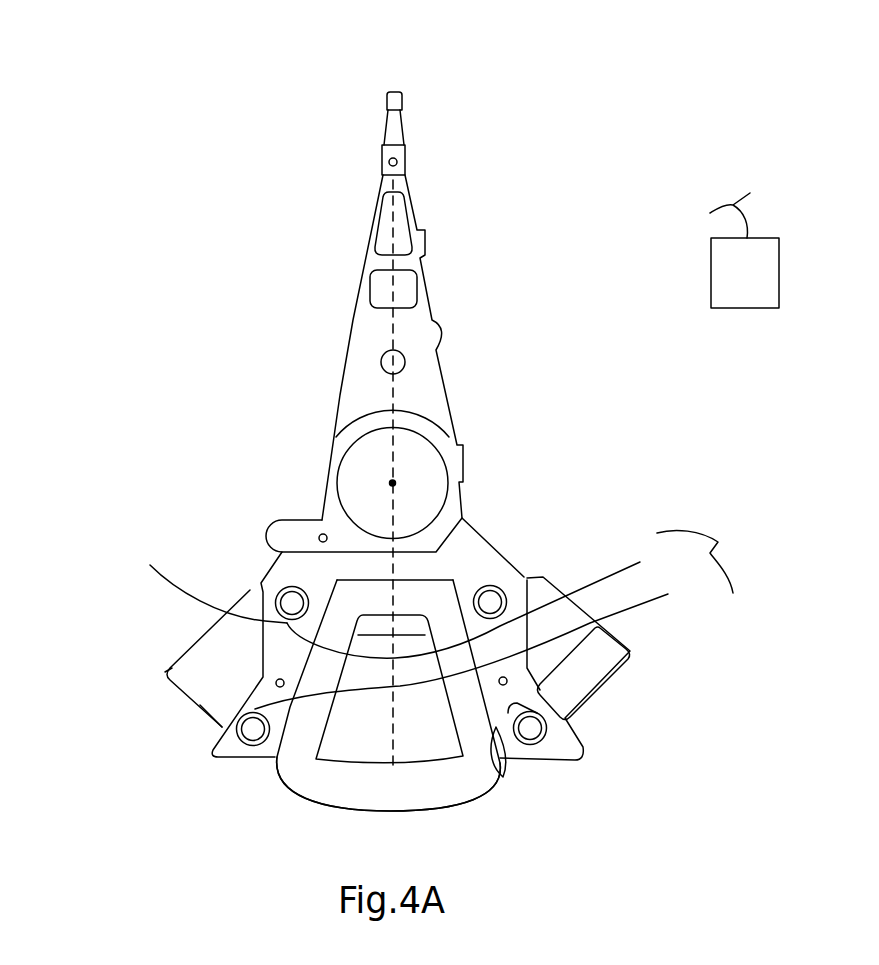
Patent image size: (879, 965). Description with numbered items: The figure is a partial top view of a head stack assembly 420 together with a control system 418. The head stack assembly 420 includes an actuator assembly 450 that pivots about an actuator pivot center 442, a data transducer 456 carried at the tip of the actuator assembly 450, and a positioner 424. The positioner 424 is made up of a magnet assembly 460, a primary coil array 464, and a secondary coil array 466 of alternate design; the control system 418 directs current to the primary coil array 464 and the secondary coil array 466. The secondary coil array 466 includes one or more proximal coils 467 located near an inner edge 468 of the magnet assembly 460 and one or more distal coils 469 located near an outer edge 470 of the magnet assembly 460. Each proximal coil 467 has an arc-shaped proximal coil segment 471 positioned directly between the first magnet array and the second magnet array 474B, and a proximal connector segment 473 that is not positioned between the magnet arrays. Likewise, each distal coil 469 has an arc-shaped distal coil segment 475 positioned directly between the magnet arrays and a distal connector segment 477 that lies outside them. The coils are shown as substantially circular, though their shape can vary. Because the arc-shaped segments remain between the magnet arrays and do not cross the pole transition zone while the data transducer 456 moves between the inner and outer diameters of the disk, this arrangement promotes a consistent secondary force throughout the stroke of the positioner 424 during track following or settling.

The data transducer 456 is at (395, 92).
The actuator assembly 450 is at (455, 263).
The actuator pivot center 442 is at (392, 483).
The positioner 424 is at (552, 535).
The proximal connector segment 473 is at (484, 586).
The inner edge 468 is at (370, 637).
The primary coil array 464 is at (393, 787).
The proximal coil segment 471 is at (201, 581).
The proximal coil 467 is at (495, 638).
The distal coil 469 is at (525, 650).
The secondary coil array 466 is at (712, 553).
The second magnet array 474B is at (213, 647).
The magnet assembly 460 is at (164, 676).
The outer edge 470 is at (202, 714).
The distal connector segment 477 is at (540, 758).
The distal coil segment 475 is at (503, 777).
The head stack assembly 420 is at (622, 148).
The control system 418 is at (744, 250).